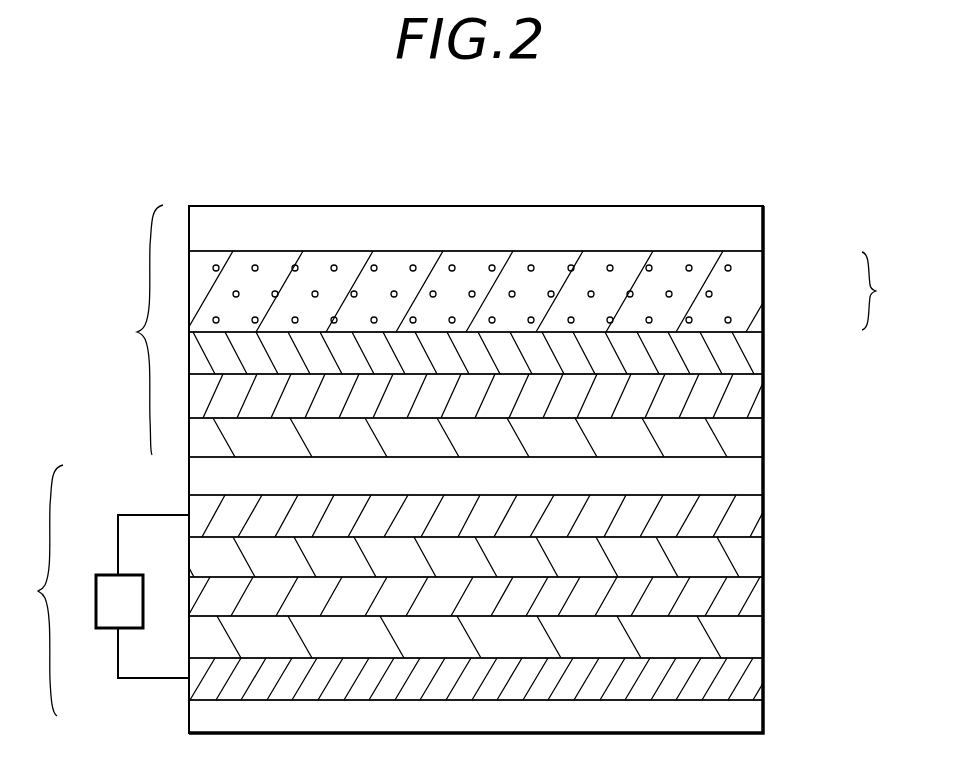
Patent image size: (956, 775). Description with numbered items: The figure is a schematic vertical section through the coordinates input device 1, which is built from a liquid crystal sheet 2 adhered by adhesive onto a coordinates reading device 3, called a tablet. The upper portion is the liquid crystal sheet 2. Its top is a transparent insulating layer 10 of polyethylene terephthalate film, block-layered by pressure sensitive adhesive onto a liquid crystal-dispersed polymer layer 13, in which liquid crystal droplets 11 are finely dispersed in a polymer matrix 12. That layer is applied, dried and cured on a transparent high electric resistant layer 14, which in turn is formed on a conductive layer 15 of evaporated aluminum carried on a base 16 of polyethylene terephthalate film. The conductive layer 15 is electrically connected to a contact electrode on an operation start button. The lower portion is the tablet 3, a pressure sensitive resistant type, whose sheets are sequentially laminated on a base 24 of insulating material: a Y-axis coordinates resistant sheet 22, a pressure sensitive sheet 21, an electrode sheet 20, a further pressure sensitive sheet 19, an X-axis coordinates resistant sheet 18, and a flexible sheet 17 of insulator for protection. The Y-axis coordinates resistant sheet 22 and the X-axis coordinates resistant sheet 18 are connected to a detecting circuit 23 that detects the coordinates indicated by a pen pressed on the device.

The organic electroluminescent device 1 is at (503, 208).
The liquid crystal sheet 2 is at (134, 330).
The coordinates reading device 3 is at (37, 590).
The transparent insulating layer 10 is at (745, 227).
The liquid crystal droplets 11 is at (732, 269).
The polymer matrix 12 is at (745, 315).
The liquid crystal-dispersed polymer layer 13 is at (888, 291).
The transparent high electric resistant layer 14 is at (755, 353).
The conductive layer 15 is at (755, 404).
The base 16 is at (755, 440).
The flexible sheet 17 is at (755, 478).
The X-axis coordinates resistant sheet 18 is at (755, 518).
The pressure sensitive sheet 19 is at (755, 558).
The electrode sheet 20 is at (755, 602).
The pressure sensitive sheet 21 is at (755, 638).
The Y-axis coordinates resistant sheet 22 is at (755, 680).
The detecting circuit 23 is at (105, 630).
The base 24 is at (750, 722).